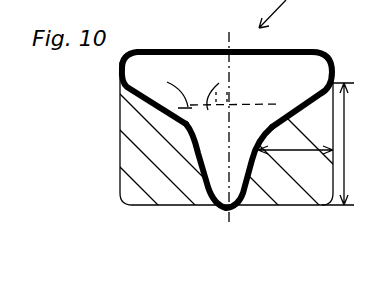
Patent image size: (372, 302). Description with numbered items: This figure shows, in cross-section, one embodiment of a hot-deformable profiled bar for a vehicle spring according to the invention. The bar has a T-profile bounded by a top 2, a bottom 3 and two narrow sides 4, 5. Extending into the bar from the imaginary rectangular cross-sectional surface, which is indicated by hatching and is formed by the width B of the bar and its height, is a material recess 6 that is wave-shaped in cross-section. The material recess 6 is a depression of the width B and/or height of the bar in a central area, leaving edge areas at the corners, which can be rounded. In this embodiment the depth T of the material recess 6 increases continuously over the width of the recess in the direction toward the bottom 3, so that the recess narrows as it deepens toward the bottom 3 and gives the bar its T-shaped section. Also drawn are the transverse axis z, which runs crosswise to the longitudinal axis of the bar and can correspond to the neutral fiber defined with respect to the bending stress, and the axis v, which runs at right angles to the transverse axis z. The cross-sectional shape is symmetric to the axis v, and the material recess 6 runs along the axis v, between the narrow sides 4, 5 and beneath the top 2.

The top 2 is at (157, 49).
The bottom 3 is at (233, 208).
The narrow side 4 is at (322, 56).
The narrow side 5 is at (120, 62).
The material recess 6 is at (103, 190).
The transverse axis z is at (152, 78).
The axis V v is at (230, 67).
The width B is at (364, 112).
The depth T is at (281, 169).